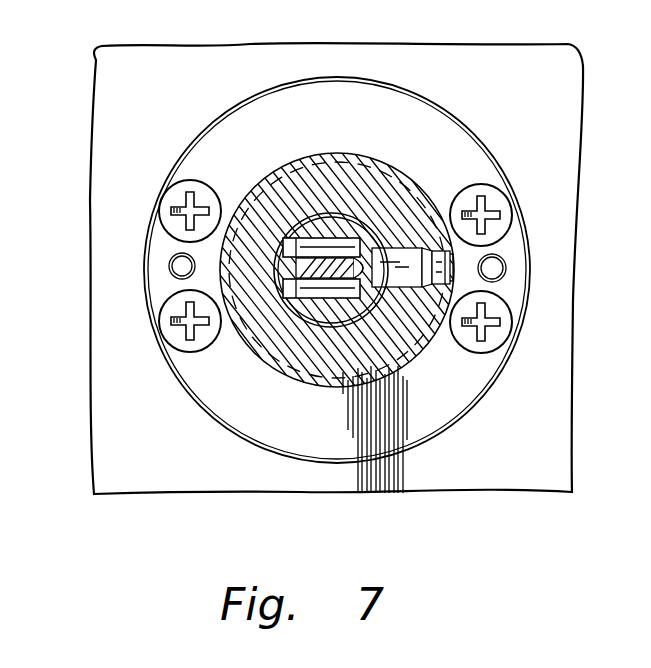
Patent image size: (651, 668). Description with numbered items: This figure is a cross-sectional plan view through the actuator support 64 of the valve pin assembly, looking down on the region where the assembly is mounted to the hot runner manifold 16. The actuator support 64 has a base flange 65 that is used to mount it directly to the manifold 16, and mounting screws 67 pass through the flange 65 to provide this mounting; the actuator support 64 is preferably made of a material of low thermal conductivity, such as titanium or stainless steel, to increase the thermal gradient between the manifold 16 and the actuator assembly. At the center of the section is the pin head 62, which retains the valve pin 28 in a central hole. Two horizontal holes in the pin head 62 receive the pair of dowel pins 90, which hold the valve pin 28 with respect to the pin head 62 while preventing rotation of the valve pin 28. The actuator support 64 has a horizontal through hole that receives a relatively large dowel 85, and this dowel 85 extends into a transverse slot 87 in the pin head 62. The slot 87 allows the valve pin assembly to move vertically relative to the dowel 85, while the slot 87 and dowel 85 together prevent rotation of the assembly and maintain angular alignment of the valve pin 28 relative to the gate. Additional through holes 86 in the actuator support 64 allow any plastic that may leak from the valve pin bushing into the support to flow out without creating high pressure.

The hot runner manifold 16 is at (557, 91).
The valve pin 28 is at (330, 266).
The pin head 62 is at (305, 298).
The actuator support 64 is at (290, 178).
The base flange 65 is at (222, 392).
The mounting screws 67 is at (498, 205).
The dowel 85 is at (393, 262).
The through holes 86 is at (436, 200).
The transverse slot 87 is at (378, 290).
The dowel pins 90 is at (316, 244).